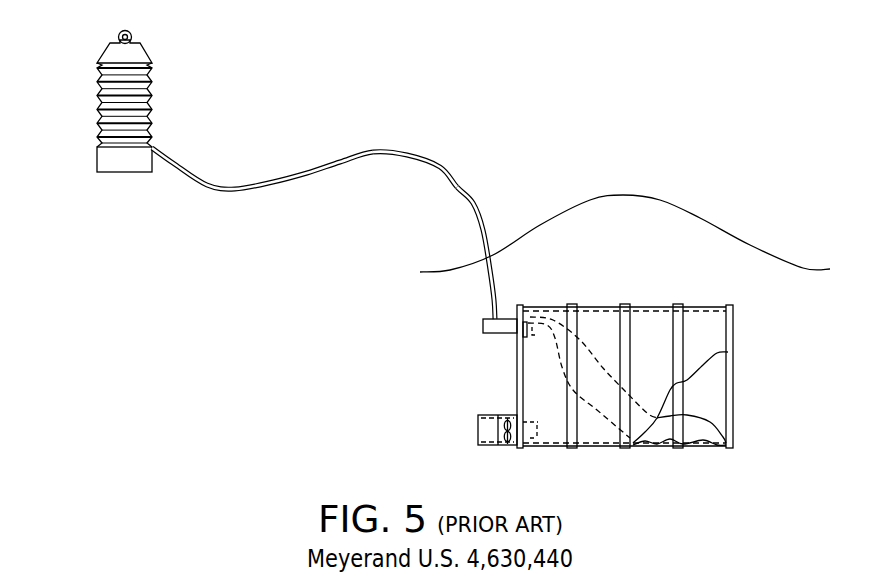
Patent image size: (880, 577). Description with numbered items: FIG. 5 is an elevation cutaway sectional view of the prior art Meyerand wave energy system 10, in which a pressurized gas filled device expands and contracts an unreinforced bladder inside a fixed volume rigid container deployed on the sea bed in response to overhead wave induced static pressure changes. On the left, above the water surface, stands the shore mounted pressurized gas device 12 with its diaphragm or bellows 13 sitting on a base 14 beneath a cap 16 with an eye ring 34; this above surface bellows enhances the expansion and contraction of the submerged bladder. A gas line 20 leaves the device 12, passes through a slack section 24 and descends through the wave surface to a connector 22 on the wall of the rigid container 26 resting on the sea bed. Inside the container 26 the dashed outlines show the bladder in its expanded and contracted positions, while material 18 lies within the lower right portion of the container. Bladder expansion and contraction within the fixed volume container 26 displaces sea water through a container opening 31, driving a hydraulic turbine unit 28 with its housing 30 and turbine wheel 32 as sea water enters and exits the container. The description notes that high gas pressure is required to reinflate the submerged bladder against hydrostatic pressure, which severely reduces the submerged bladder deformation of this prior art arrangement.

The cable 10 is at (456, 186).
The buoy 12 is at (128, 117).
The bellows 13 is at (150, 98).
The base 14 is at (125, 162).
The cap 16 is at (102, 67).
The sediment 18 is at (690, 428).
The cable attachment 20 is at (153, 142).
The junction box 22 is at (482, 317).
The cable slack 24 is at (360, 208).
The tank 26 is at (655, 303).
The pump unit 28 is at (467, 429).
The pump housing 30 is at (495, 415).
The outlet 31 is at (533, 447).
The impeller 32 is at (474, 432).
The eye ring 34 is at (145, 45).